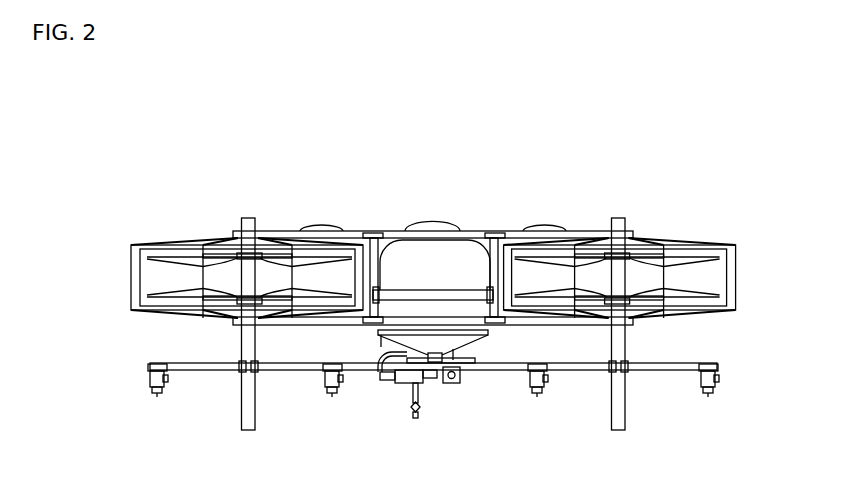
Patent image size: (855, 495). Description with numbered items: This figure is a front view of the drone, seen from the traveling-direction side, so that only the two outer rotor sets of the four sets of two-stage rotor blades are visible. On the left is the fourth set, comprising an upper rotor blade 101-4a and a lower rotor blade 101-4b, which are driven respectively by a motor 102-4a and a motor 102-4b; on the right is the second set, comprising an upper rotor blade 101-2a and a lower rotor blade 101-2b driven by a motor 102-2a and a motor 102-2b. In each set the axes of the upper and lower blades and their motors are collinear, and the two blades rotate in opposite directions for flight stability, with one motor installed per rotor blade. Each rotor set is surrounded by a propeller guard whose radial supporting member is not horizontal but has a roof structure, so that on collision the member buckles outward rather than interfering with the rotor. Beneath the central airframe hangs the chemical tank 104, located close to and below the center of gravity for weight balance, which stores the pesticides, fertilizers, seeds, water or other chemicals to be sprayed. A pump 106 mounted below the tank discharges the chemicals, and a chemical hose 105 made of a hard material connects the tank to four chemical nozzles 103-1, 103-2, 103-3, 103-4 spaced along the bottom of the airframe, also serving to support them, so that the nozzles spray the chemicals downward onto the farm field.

The rotor blade 101-4a is at (185, 258).
The rotor blade 101-4b is at (180, 298).
The motor 102-4a is at (255, 255).
The motor 102-4b is at (237, 300).
The rotor blade 101-2a is at (687, 258).
The rotor blade 101-2b is at (688, 298).
The motor 102-2a is at (610, 255).
The motor 102-2b is at (630, 300).
The chemical nozzle 103-1 is at (708, 398).
The chemical nozzle 103-2 is at (535, 398).
The chemical nozzle 103-3 is at (329, 398).
The chemical nozzle 103-4 is at (154, 398).
The chemical tank 104 is at (458, 347).
The chemical hose 105 is at (207, 372).
The pump 106 is at (393, 385).